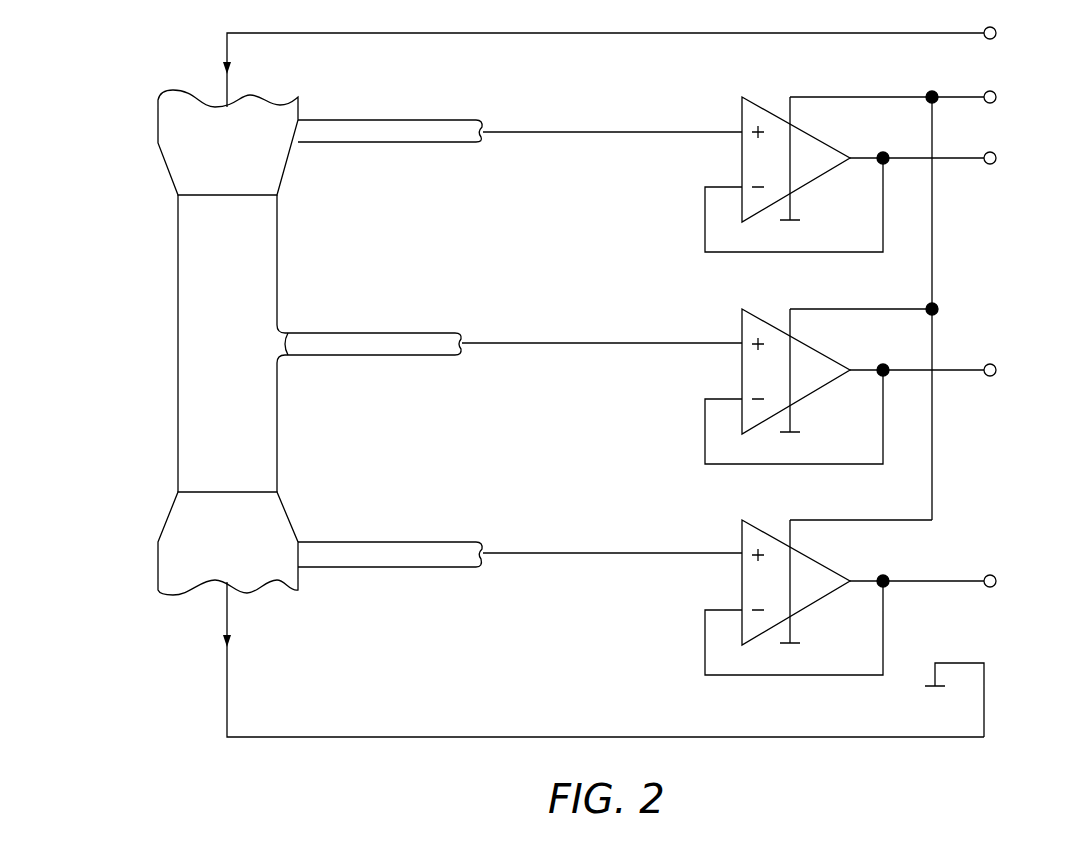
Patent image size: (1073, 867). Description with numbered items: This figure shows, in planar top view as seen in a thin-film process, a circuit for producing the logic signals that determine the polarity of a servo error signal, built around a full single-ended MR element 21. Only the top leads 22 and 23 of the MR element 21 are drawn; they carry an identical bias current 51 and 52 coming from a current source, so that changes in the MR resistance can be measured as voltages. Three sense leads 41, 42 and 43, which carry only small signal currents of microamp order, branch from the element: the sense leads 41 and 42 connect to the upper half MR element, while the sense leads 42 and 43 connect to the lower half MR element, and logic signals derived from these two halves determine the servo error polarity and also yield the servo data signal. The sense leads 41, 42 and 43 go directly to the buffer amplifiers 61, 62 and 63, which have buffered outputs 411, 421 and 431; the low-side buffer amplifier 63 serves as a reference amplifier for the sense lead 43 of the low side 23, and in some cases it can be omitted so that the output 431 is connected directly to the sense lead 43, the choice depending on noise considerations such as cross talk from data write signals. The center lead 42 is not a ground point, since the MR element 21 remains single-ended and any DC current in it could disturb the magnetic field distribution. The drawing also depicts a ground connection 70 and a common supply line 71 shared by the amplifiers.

The MR element 21 is at (222, 375).
The top lead 22 is at (210, 153).
The top lead 23 is at (213, 537).
The sense lead 41 is at (355, 132).
The sense lead 42 is at (355, 345).
The sense lead 43 is at (358, 555).
The bias current 51 is at (222, 72).
The bias current 52 is at (222, 643).
The buffer amplifier 61 is at (767, 103).
The buffer amplifier 62 is at (762, 315).
The reference low-side buffer amplifier 63 is at (762, 522).
The ground 70 is at (943, 661).
The supply bus line 71 is at (855, 93).
The buffered output 411 is at (957, 157).
The buffered output 421 is at (957, 369).
The buffered output 431 is at (957, 579).